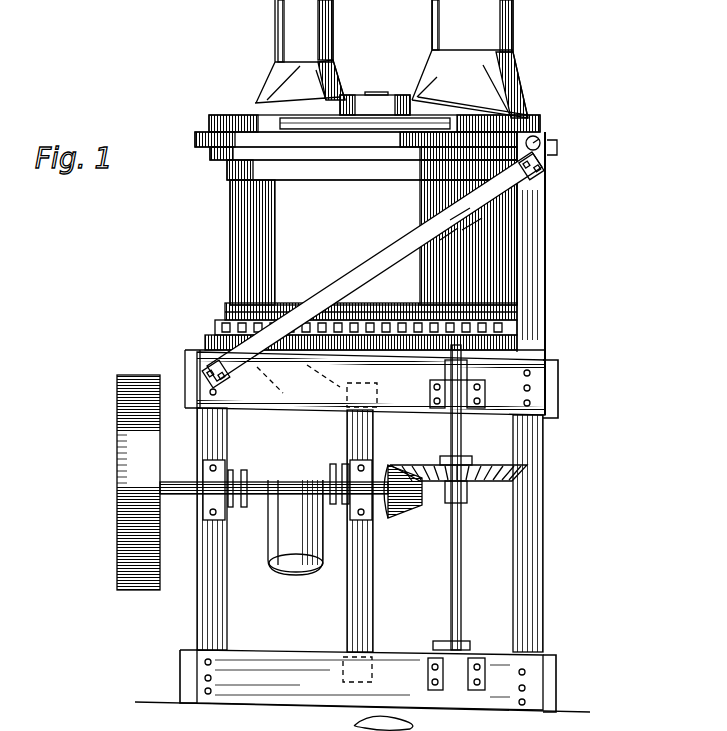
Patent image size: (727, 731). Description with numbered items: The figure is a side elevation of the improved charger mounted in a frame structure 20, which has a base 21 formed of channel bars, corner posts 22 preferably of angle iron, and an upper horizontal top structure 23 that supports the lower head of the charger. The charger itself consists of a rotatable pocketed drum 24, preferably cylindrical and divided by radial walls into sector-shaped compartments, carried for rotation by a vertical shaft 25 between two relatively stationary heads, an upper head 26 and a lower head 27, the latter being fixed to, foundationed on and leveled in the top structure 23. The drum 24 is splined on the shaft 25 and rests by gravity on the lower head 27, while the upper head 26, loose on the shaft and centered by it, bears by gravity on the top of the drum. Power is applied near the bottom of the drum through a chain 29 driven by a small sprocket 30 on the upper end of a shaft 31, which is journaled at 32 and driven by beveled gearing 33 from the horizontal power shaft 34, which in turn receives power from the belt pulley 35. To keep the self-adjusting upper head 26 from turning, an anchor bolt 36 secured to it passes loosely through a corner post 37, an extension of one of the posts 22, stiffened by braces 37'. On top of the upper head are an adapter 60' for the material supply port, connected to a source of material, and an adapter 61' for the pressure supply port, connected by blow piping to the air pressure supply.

The frame structure 20 is at (497, 453).
The base 21 is at (490, 670).
The corner posts 22 is at (527, 535).
The upper horizontal top structure 23 is at (550, 395).
The rotatable pocketed drum 24 is at (230, 215).
The vertical shaft 25 is at (373, 97).
The upper head 26 is at (209, 117).
The lower head 27 is at (200, 355).
The chain 29 is at (517, 330).
The small sprocket 30 is at (517, 317).
The shaft 31 is at (450, 434).
The journals 32 is at (500, 383).
The beveled gearing 33 is at (426, 492).
The horizontal power shaft 34 is at (318, 518).
The belt pulley 35 is at (130, 474).
The anchor bolt 36 is at (539, 139).
The corner post 37 is at (553, 273).
The braces 37' is at (396, 270).
The adapter 60' is at (493, 59).
The adapter 61' is at (285, 51).